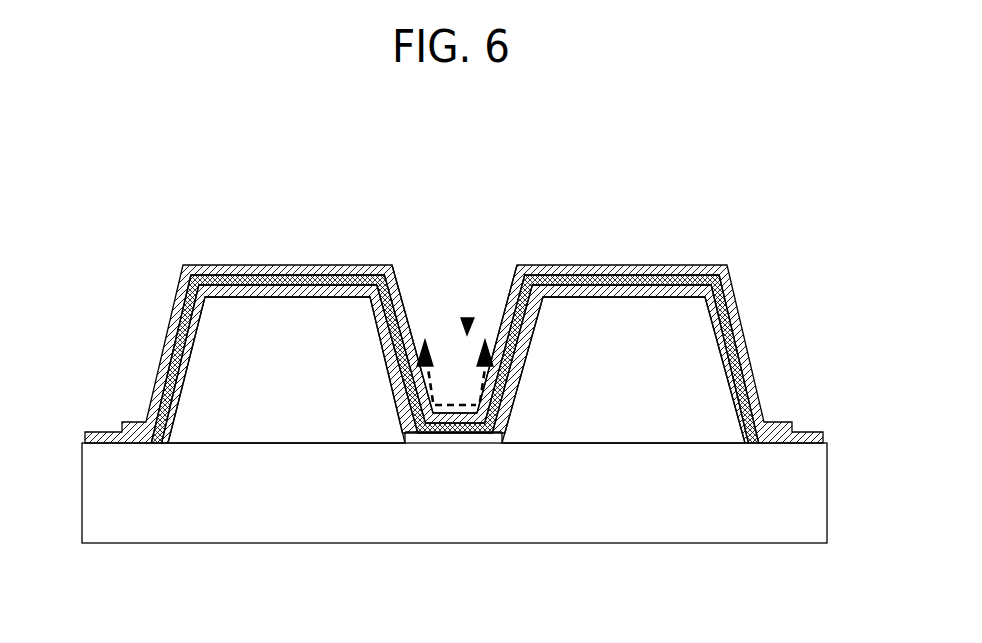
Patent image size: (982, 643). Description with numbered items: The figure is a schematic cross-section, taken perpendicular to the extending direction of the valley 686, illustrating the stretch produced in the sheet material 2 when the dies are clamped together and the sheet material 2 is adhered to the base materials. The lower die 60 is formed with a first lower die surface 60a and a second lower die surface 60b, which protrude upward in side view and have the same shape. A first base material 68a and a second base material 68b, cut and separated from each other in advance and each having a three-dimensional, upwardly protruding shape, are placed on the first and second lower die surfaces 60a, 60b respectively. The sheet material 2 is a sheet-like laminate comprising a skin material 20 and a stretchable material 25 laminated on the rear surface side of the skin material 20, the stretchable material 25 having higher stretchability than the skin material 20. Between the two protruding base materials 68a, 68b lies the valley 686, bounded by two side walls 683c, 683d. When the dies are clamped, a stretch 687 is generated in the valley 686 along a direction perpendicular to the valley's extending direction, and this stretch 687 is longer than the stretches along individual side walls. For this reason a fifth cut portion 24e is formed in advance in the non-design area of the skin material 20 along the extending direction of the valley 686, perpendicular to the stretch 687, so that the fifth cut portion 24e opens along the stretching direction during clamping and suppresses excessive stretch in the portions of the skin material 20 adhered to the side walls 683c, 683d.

The sheet material 2 is at (758, 210).
The skin material 20 is at (626, 277).
The stretchable material 25 is at (582, 277).
The fifth cut portion 24e is at (440, 420).
The lower die 60 is at (385, 493).
The first lower die surface 60a is at (273, 387).
The second lower die surface 60b is at (620, 387).
The first base material 68a is at (333, 265).
The second base material 68b is at (668, 277).
The side wall 683c is at (416, 355).
The side wall 683d is at (500, 333).
The valley 686 is at (470, 318).
The stretch 687 is at (443, 403).